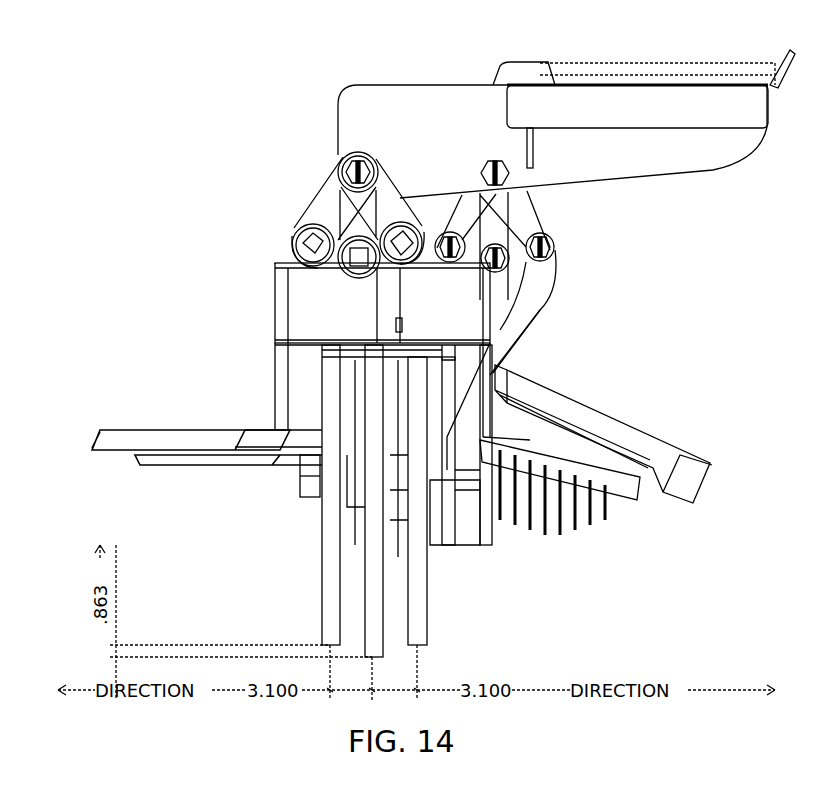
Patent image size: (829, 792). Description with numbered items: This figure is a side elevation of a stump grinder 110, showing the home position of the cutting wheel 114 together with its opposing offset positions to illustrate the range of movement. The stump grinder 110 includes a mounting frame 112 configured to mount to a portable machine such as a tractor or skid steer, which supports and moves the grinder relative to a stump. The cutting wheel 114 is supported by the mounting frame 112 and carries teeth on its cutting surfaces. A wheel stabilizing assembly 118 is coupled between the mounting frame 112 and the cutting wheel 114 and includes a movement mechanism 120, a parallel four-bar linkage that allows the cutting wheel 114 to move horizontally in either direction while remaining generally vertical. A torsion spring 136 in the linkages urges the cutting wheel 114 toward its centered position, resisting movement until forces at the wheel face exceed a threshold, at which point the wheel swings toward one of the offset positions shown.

The stump grinder 110 is at (170, 143).
The mounting frame 112 is at (343, 72).
The cutting wheel 114 is at (322, 560).
The wheel stabilizing assembly 118 is at (296, 171).
The movement mechanism 120 is at (562, 229).
The torsion spring 136 is at (300, 246).